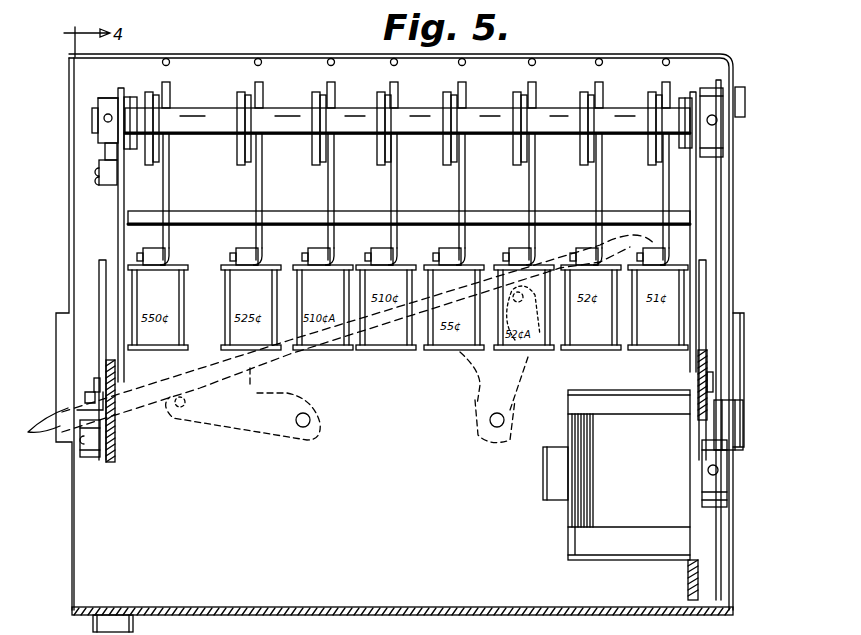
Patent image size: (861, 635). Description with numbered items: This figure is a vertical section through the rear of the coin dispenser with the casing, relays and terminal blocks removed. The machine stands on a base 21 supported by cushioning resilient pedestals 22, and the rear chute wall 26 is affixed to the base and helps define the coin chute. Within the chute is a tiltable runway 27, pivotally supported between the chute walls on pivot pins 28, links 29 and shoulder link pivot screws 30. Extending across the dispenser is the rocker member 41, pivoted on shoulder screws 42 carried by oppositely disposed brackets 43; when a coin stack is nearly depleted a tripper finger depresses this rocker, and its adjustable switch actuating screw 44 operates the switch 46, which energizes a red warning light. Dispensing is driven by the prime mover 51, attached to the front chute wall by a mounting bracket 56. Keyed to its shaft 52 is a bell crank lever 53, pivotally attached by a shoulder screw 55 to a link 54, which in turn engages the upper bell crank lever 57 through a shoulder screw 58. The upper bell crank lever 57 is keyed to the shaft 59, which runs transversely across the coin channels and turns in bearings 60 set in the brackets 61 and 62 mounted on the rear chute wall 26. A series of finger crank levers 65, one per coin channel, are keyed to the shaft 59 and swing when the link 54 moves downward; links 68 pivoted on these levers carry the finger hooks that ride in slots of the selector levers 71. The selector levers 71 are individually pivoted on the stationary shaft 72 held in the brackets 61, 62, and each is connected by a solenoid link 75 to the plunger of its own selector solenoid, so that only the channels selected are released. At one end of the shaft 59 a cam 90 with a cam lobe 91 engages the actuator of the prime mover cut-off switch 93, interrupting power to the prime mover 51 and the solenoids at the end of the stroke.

The base 21 is at (207, 607).
The cushioning resilient pedestals 22 is at (134, 627).
The rear chute wall 26 is at (84, 536).
The tiltable runway 27 is at (39, 418).
The pivot pins 28 is at (515, 312).
The links 29 is at (460, 393).
The shoulder link pivot screws 30 is at (470, 430).
The rocker member 41 is at (100, 297).
The shoulder screws 42 is at (745, 375).
The brackets 43 is at (683, 368).
The adjustable switch actuating screw 44 is at (84, 397).
The switch 46 is at (80, 455).
The prime mover 51 is at (568, 516).
The shaft 52 is at (727, 468).
The bell crank lever 53 is at (710, 485).
The link 54 is at (722, 178).
The shoulder screw 55 is at (752, 423).
The mounting bracket 56 is at (688, 585).
The upper bell crank lever 57 is at (712, 90).
The shoulder screw 58 is at (745, 108).
The shaft 59 is at (222, 112).
The bearings 60 is at (686, 96).
The bracket 61 is at (706, 190).
The bracket 62 is at (135, 190).
The finger crank levers 65 is at (580, 154).
The links 68 is at (608, 151).
The selector levers 71 is at (679, 186).
The stationary shaft 72 is at (205, 208).
The solenoid links 75 is at (690, 238).
The cam 90 is at (100, 147).
The cam lobe 91 is at (104, 97).
The prime mover cut-off switch 93 is at (104, 186).